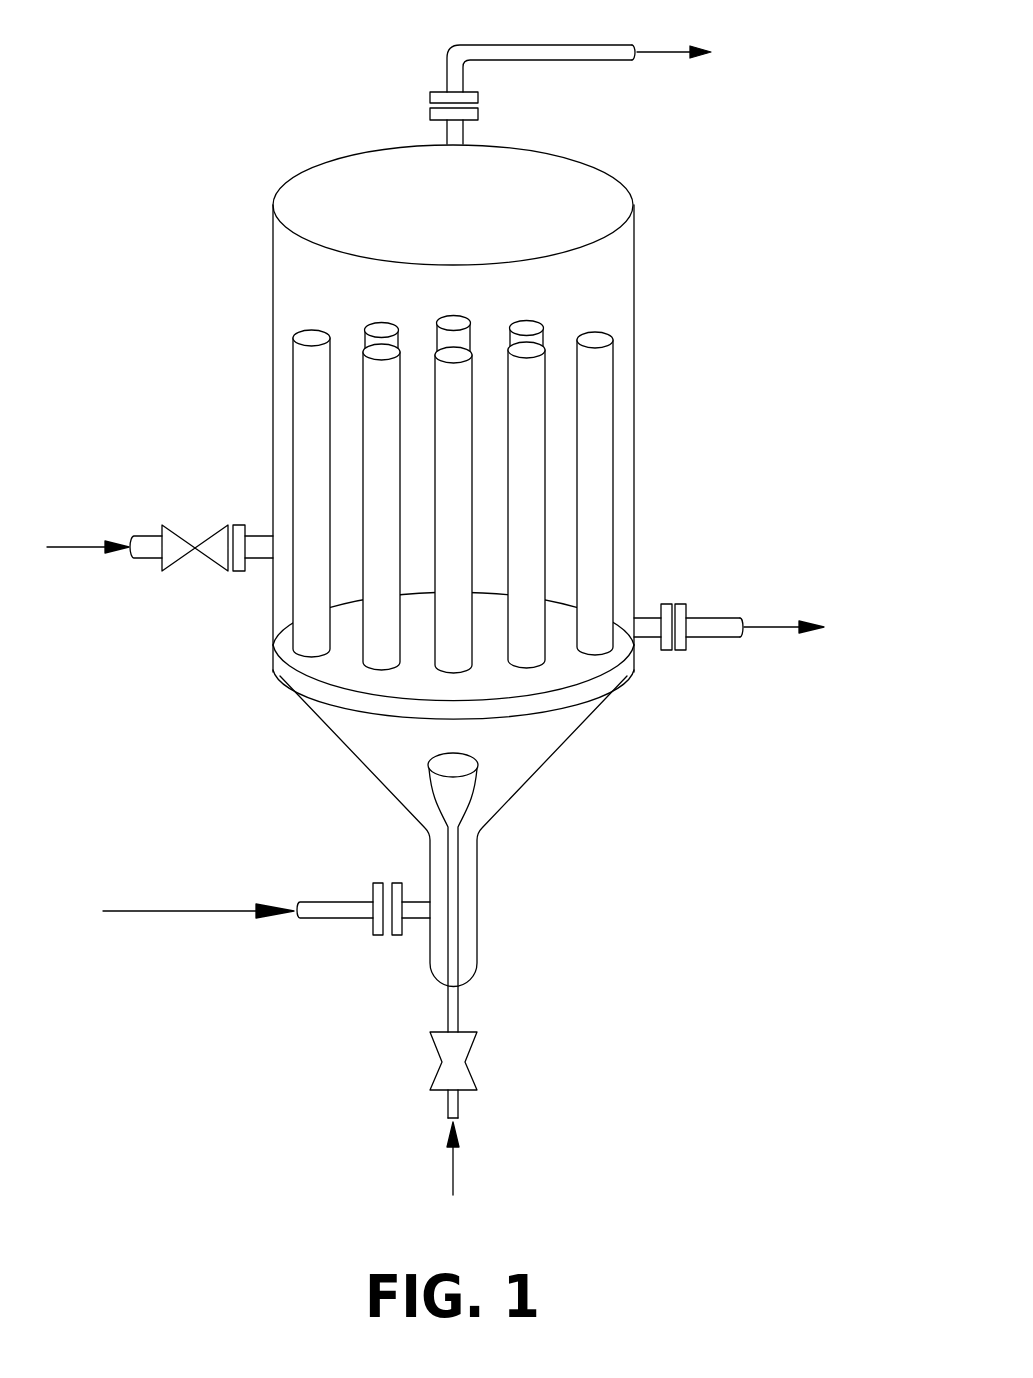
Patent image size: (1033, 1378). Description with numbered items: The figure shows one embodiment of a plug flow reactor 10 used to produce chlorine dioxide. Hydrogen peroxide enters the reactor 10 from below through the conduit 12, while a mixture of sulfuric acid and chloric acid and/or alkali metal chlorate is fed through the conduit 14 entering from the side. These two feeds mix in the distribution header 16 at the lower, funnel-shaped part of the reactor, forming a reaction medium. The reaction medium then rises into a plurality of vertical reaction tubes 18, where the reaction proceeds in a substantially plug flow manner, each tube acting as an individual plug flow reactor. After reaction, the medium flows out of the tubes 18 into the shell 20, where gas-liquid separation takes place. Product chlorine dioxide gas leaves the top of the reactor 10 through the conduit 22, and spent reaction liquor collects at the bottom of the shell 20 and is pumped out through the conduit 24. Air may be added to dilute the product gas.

The plug flow reactor 10 is at (724, 280).
The conduit 12 is at (460, 1108).
The conduit 14 is at (318, 902).
The distribution header 16 is at (515, 773).
The reaction tubes 18 is at (537, 397).
The shell 20 is at (618, 257).
The conduit 22 is at (600, 62).
The conduit 24 is at (713, 612).